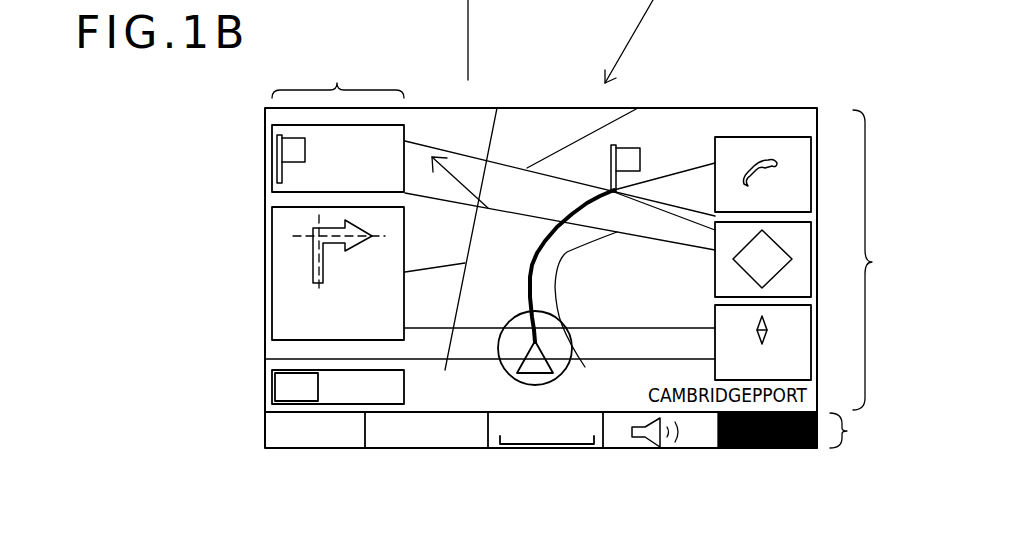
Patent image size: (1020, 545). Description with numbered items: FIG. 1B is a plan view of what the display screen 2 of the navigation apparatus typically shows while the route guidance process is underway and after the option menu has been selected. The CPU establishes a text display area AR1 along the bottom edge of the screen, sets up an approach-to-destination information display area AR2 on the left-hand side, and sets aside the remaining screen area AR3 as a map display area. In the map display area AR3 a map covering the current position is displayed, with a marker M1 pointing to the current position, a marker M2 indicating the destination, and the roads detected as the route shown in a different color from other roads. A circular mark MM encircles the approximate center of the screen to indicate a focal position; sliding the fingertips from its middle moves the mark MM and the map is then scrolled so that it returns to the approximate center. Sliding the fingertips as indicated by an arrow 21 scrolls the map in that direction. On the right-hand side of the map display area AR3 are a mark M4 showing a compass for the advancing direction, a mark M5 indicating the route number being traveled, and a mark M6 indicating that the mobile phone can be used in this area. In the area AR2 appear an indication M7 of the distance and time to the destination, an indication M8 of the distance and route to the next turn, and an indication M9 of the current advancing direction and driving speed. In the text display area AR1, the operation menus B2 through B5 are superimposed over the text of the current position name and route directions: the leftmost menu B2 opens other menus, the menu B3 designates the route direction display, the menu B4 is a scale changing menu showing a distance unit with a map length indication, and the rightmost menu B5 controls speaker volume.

The display screen 2 is at (703, 108).
The arrow 21 is at (463, 182).
The marker M1 is at (533, 353).
The marker M2 is at (632, 148).
The mark M4 is at (800, 345).
The mark M5 is at (800, 263).
The mark M6 is at (800, 178).
The indication M7 is at (275, 190).
The indication M8 is at (275, 272).
The indication M9 is at (275, 397).
The circular mark MM is at (562, 368).
The text display area AR1 is at (581, 430).
The approach-to-destination information display area AR2 is at (338, 76).
The map display area AR3 is at (886, 260).
The menu B2 is at (335, 446).
The menu B3 is at (378, 446).
The menu B4 is at (497, 446).
The menu B5 is at (697, 446).